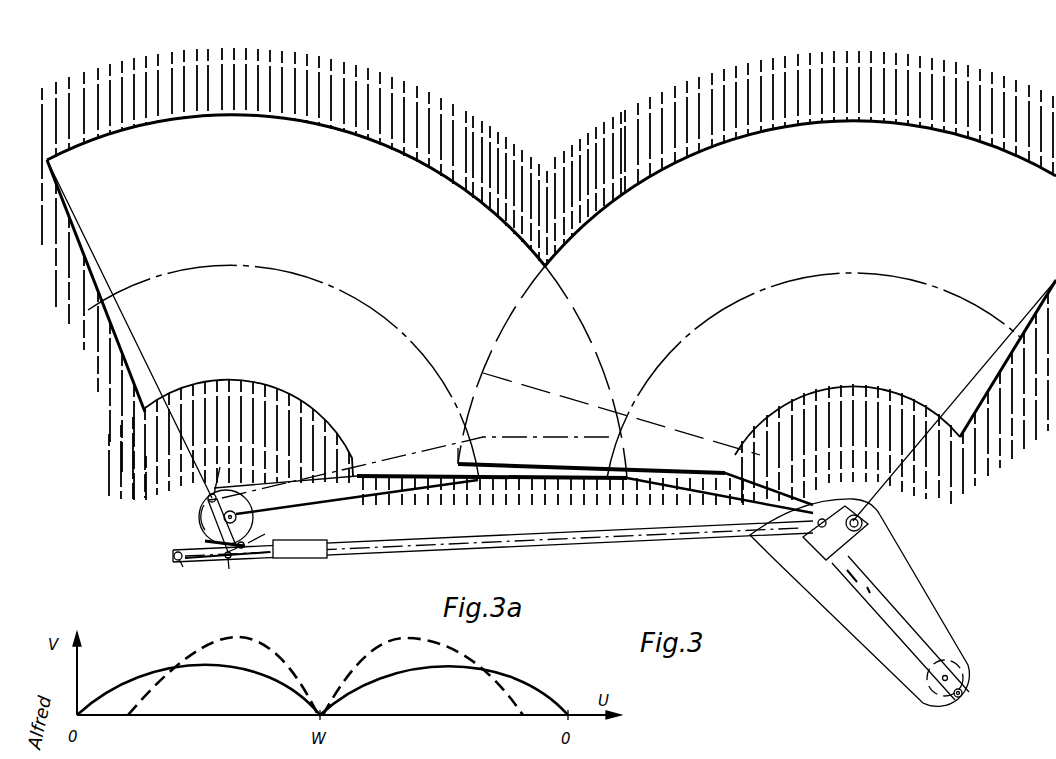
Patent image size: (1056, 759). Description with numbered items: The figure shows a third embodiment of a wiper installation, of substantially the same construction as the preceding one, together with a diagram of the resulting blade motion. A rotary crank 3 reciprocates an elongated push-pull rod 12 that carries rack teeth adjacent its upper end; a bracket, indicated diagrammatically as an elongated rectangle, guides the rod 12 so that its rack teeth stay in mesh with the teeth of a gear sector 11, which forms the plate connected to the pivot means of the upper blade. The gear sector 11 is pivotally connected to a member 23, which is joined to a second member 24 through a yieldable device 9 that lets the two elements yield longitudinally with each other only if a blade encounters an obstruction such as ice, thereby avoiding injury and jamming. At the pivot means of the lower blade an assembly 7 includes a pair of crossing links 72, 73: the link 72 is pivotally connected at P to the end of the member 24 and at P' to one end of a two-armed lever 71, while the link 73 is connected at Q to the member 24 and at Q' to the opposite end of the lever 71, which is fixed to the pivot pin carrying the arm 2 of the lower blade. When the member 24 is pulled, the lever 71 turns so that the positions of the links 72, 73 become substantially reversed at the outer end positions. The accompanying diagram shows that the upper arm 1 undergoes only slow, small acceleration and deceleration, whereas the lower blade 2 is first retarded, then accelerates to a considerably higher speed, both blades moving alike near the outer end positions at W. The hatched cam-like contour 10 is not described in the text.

In FIG. 3, the cam 10 is at (549, 284).
In FIG. 3, the arm 2 is at (440, 477).
In FIG. 3A, the arm 2 is at (262, 655).
In FIG. 3, the upper arm 1 is at (681, 468).
In FIG. 3A, the upper arm 1 is at (155, 675).
In FIG. 3, the assembly 7 is at (162, 523).
In FIG. 3, the link 73 is at (201, 511).
In FIG. 3, the two-armed lever 71 is at (236, 511).
In FIG. 3, the link 72 is at (207, 543).
In FIG. 3, the member 24 is at (257, 556).
In FIG. 3, the yieldable device 9 is at (310, 553).
In FIG. 3, the member 23 is at (582, 541).
In FIG. 3, the gear sector 11 is at (866, 529).
In FIG. 3, the push-pull rod 12 is at (870, 587).
In FIG. 3, the rotary crank 3 is at (962, 672).